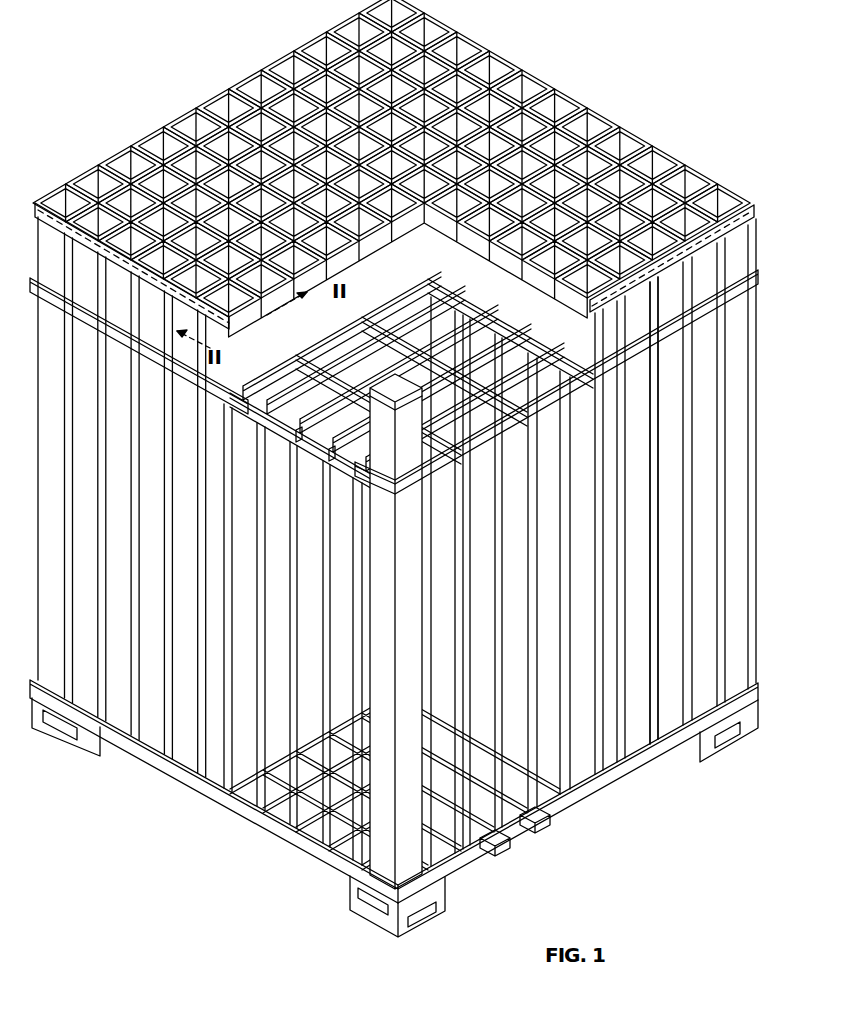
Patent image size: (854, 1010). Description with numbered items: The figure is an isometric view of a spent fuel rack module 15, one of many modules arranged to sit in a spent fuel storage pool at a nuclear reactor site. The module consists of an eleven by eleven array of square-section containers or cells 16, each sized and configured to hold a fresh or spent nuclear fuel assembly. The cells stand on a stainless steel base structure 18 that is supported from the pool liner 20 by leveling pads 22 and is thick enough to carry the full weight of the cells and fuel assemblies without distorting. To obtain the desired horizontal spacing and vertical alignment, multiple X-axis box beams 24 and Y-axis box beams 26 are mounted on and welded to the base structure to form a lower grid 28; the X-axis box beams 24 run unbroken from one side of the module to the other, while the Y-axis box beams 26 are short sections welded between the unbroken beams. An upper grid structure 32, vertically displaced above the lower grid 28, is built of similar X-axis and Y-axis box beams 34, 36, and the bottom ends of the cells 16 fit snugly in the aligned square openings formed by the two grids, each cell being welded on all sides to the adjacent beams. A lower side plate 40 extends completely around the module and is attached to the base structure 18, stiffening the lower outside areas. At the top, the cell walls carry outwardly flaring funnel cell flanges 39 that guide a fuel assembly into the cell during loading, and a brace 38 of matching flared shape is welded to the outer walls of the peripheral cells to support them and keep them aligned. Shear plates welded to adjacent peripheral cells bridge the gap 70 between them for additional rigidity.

The spent fuel rack module 15 is at (590, 28).
The cells 16 is at (82, 265).
The base structure 18 is at (215, 799).
The pool liner 20 is at (119, 810).
The leveling pads 22 is at (78, 750).
The X-axis box beams 24 is at (513, 753).
The Y-axis box beams 26 is at (523, 840).
The lower grid 28 is at (652, 814).
The upper grid structure 32 is at (322, 499).
The X-axis box beams of upper grid 34 is at (330, 456).
The Y-axis box beams of upper grid 36 is at (540, 404).
The brace 38 is at (36, 204).
The funnel cell flanges 39 is at (591, 115).
The lower side plate 40 is at (275, 829).
The gap 70 is at (652, 507).